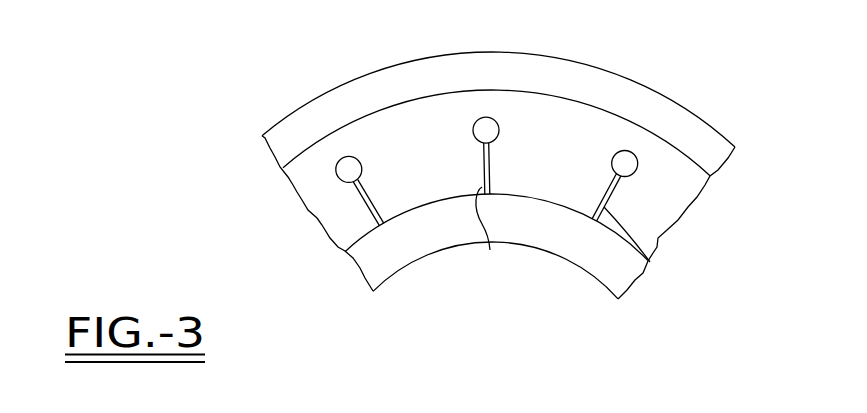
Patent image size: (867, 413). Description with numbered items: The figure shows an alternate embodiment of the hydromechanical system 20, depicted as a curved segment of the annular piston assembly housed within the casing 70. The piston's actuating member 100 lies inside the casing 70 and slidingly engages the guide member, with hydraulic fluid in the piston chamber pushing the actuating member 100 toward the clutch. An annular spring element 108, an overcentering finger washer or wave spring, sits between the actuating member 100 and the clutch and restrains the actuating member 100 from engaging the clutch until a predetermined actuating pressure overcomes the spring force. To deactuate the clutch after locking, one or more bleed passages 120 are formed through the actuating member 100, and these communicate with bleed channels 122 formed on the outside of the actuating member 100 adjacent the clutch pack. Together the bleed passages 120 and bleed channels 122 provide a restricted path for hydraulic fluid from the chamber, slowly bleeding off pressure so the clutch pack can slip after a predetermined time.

The hydromechanical system 20 is at (344, 72).
The casing 70 is at (626, 88).
The actuating member 100 is at (572, 117).
The spring element 108 is at (525, 243).
The bleed passages 120 is at (486, 117).
The bleed channels 122 is at (370, 213).